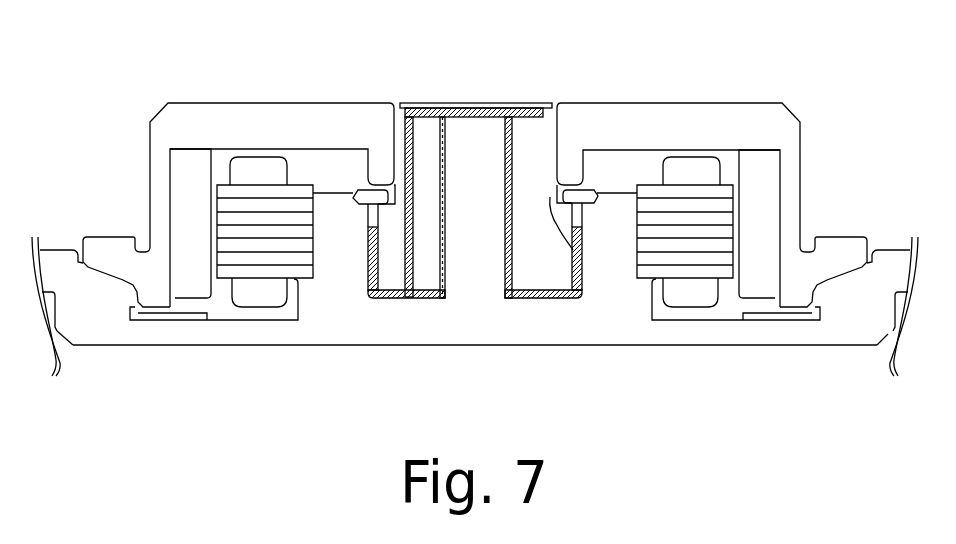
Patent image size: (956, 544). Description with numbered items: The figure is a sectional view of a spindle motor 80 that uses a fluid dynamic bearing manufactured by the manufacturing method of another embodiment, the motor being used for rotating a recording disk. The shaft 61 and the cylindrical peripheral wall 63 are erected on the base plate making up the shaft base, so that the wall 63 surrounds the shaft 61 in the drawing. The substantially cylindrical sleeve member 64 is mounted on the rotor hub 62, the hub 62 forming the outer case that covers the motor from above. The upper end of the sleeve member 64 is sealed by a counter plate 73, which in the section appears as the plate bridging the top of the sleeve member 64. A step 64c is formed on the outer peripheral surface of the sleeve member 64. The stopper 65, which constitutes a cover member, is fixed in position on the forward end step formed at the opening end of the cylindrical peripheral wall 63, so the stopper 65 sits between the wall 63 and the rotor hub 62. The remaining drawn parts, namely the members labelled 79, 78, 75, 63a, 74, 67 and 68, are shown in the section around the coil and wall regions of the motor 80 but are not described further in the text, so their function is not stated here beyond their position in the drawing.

The motor unit 80 is at (147, 102).
The rotor hub 62 is at (260, 130).
The yoke plate 79 is at (203, 237).
The coil 78 is at (272, 227).
The cylindrical peripheral wall 63 is at (340, 237).
The stopper 65 is at (372, 197).
The terminal block 75 is at (598, 190).
The bobbin holder 63a is at (590, 203).
The terminal pin 74 is at (583, 227).
The counter plate 73 is at (513, 106).
The sleeve member 64 is at (420, 157).
The shaft 61 is at (448, 237).
The partition wall 67 is at (508, 300).
The bottom wall 68 is at (513, 300).
The step 64c is at (573, 250).